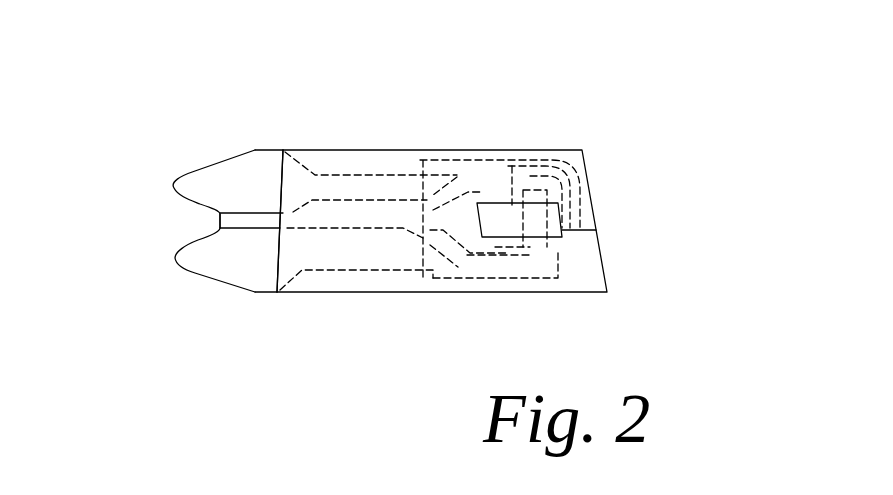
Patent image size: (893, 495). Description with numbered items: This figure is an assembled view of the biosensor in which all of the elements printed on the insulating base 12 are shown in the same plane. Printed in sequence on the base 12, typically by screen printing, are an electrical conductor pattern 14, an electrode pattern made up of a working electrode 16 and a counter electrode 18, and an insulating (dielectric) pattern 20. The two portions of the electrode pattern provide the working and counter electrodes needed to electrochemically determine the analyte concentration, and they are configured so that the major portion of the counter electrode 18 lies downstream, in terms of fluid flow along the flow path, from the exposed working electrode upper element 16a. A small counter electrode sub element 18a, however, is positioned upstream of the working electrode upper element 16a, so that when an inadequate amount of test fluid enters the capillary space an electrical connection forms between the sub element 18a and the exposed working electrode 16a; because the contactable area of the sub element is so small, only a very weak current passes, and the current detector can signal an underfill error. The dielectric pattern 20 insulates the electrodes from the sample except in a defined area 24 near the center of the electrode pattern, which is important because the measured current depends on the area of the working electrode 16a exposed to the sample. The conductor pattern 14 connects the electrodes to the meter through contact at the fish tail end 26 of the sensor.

The insulating base 12 is at (607, 287).
The electrical conductor pattern 14 is at (337, 177).
The working electrode 16 is at (492, 278).
The working electrode upper element 16a is at (537, 217).
The counter electrode 18 is at (478, 160).
The counter electrode sub element 18a is at (570, 181).
The insulating pattern 20 is at (282, 178).
The defined area near the center of the electrode pattern 24 is at (557, 215).
The fish tail end 26 is at (180, 219).